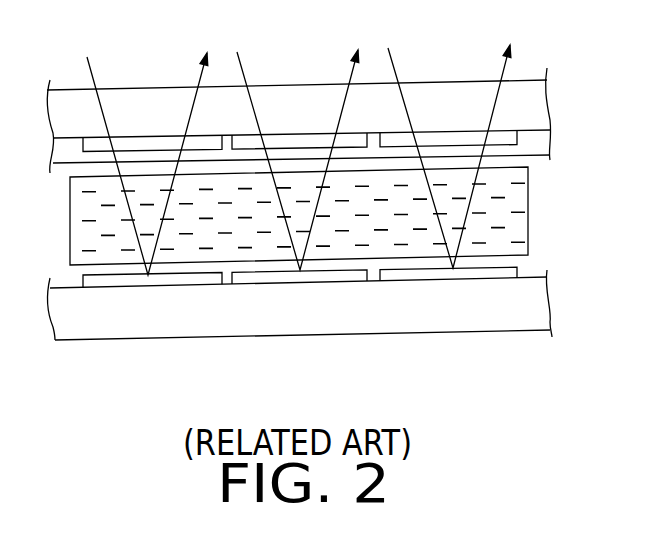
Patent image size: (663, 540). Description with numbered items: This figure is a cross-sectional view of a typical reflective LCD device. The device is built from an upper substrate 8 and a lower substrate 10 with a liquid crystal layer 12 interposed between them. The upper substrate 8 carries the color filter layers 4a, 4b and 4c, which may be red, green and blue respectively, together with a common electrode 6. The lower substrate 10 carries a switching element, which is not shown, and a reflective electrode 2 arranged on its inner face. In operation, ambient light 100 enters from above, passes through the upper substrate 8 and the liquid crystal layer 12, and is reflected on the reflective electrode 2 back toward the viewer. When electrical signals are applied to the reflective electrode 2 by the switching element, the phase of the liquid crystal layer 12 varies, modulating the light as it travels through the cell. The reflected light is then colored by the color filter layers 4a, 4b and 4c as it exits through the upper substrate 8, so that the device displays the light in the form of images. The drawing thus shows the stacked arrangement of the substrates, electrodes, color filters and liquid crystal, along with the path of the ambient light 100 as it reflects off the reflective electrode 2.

The ambient light 100 is at (86, 70).
The color filter layer 4a is at (148, 142).
The color filter layer 4b is at (305, 142).
The color filter layer 4c is at (457, 137).
The upper substrate 8 is at (575, 77).
The common electrode 6 is at (547, 143).
The liquid crystal layer 12 is at (575, 170).
The lower substrate 10 is at (575, 263).
The reflective electrode 2 is at (118, 283).